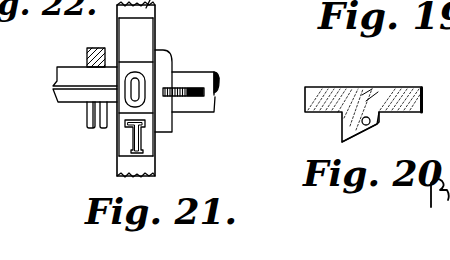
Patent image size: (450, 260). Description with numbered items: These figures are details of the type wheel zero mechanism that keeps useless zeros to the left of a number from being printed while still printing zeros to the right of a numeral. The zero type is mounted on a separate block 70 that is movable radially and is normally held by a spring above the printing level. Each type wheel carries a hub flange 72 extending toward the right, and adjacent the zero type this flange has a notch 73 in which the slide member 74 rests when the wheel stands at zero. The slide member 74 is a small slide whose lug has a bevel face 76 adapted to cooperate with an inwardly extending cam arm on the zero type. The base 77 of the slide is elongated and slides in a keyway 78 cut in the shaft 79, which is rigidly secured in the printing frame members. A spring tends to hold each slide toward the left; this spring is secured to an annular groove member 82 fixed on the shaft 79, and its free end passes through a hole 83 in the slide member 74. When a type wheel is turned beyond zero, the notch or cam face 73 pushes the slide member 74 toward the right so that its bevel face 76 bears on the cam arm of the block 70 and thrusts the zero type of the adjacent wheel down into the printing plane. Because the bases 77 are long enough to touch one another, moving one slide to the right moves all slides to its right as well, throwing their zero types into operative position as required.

In FIG. 21, the block 70 is at (147, 70).
In FIG. 21, the hub flange 72 is at (165, 121).
In FIG. 21, the notch 73 is at (167, 86).
In FIG. 21, the base 77 is at (196, 97).
In FIG. 20, the base 77 is at (369, 95).
In FIG. 21, the shaft 79 is at (208, 82).
In FIG. 21, the keyway 78 is at (59, 89).
In FIG. 21, the annular groove member 82 is at (95, 117).
In FIG. 20, the slide member 74 is at (343, 128).
In FIG. 20, the bevel face 76 is at (374, 128).
In FIG. 20, the hole 83 is at (363, 117).